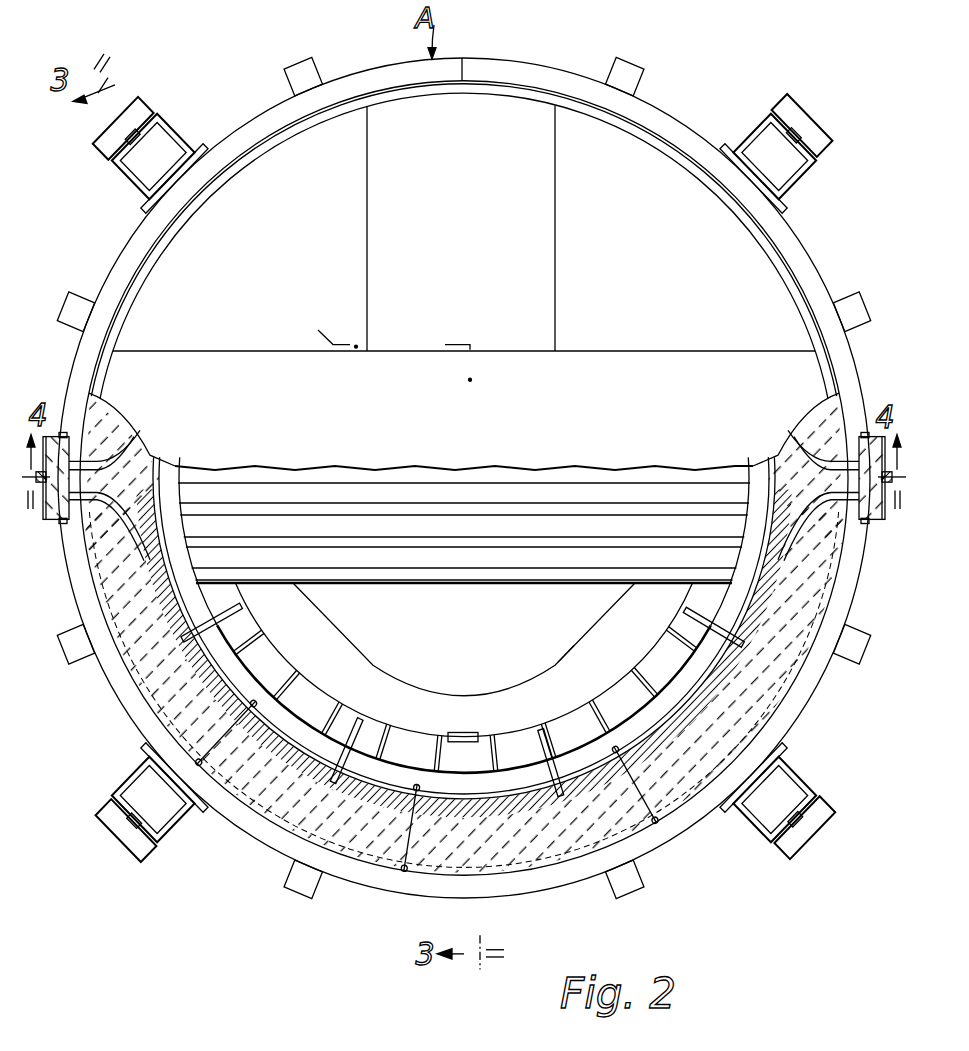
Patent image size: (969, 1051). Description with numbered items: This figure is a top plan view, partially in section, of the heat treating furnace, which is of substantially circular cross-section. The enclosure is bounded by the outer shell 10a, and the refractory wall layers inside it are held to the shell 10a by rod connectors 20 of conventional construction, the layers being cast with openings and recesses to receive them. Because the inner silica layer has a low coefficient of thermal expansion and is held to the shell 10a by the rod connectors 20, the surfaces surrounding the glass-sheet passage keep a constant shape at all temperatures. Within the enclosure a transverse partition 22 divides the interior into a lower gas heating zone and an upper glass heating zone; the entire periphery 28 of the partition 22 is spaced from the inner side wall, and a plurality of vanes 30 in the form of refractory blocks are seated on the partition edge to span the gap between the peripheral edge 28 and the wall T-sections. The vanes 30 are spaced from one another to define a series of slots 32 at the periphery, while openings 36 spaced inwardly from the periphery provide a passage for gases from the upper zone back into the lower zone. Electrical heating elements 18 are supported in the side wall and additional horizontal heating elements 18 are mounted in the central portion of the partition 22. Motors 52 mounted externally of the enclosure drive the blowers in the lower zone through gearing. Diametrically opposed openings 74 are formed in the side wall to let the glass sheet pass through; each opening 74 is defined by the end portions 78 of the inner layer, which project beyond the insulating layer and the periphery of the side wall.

The shell 10a is at (101, 389).
The electrical heating elements 18 is at (464, 510).
The rod connectors 20 is at (464, 631).
The transverse partition 22 is at (464, 639).
The periphery of the partition 28 is at (464, 632).
The vanes 30 is at (447, 737).
The slots 32 is at (464, 627).
The openings 36 is at (589, 657).
The motors 52 is at (464, 482).
The openings 74 is at (464, 495).
The end portions 78 is at (482, 653).